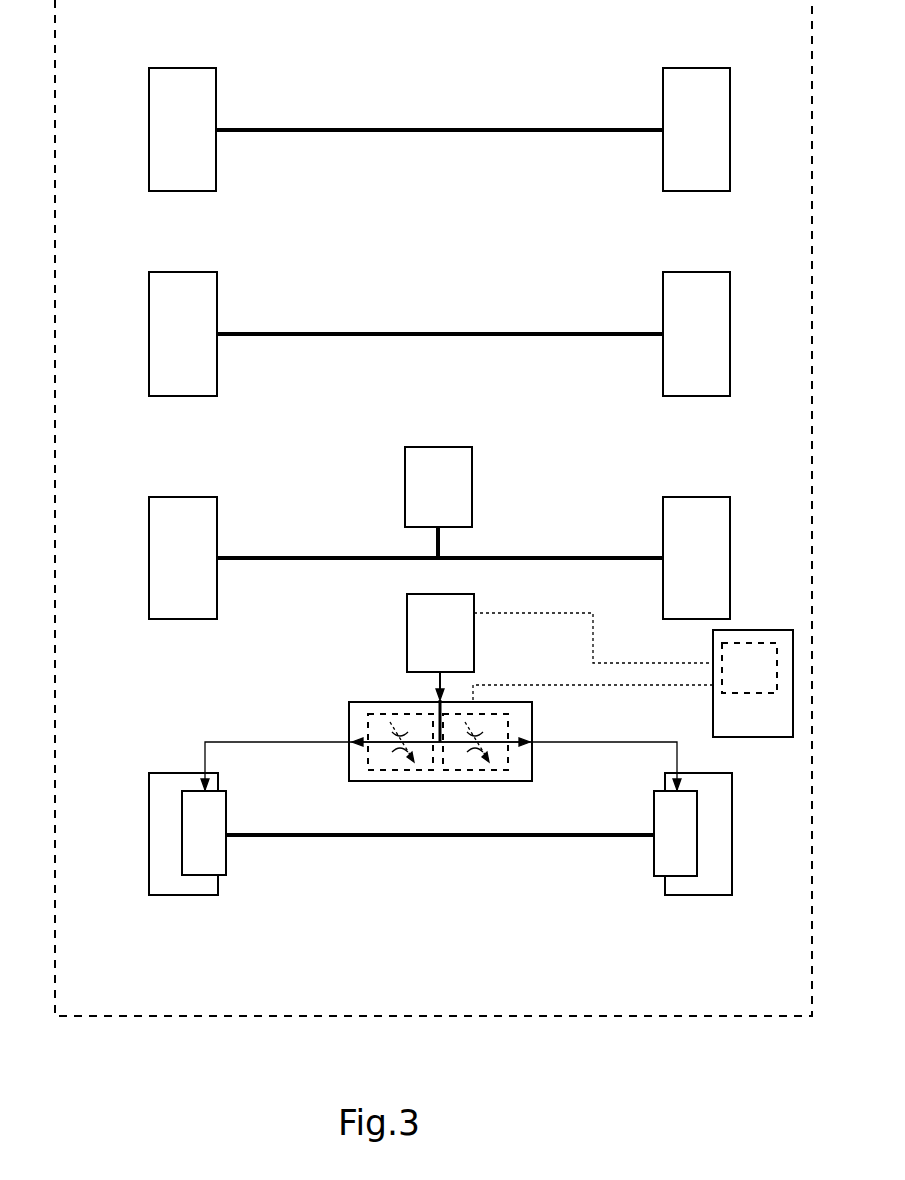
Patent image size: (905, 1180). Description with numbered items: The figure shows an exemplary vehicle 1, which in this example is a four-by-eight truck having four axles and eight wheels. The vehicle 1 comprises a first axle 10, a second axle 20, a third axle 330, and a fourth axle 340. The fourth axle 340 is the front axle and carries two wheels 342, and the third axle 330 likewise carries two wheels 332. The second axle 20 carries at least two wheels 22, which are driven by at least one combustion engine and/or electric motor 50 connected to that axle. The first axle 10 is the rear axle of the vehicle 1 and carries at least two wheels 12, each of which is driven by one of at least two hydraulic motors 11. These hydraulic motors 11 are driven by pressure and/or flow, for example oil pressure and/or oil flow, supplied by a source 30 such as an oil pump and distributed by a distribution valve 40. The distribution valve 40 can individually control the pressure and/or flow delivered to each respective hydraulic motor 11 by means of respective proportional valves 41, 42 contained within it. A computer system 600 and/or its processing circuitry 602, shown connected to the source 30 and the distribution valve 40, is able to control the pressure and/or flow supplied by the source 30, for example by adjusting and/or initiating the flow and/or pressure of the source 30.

The vehicle 1 is at (200, 1031).
The first axle 10 is at (403, 865).
The hydraulic motors 11 is at (227, 866).
The wheels of the first axle 12 is at (137, 891).
The second axle 20 is at (305, 545).
The wheels of the second axle 22 is at (136, 557).
The source 30 is at (394, 634).
The distribution valve 40 is at (335, 783).
The proportional valve 41 is at (521, 716).
The proportional valve 42 is at (358, 711).
The combustion engine and/or electric motor 50 is at (391, 485).
The third axle 330 is at (441, 319).
The wheels of the third axle 332 is at (136, 334).
The fourth axle 340 is at (435, 115).
The wheels of the fourth axle 342 is at (136, 130).
The computer system 600 is at (772, 729).
The processing circuitry 602 is at (772, 682).